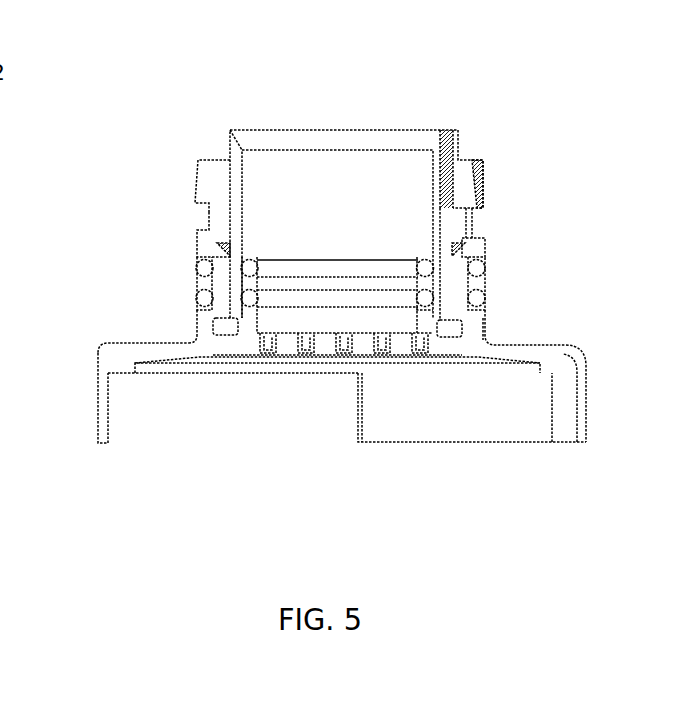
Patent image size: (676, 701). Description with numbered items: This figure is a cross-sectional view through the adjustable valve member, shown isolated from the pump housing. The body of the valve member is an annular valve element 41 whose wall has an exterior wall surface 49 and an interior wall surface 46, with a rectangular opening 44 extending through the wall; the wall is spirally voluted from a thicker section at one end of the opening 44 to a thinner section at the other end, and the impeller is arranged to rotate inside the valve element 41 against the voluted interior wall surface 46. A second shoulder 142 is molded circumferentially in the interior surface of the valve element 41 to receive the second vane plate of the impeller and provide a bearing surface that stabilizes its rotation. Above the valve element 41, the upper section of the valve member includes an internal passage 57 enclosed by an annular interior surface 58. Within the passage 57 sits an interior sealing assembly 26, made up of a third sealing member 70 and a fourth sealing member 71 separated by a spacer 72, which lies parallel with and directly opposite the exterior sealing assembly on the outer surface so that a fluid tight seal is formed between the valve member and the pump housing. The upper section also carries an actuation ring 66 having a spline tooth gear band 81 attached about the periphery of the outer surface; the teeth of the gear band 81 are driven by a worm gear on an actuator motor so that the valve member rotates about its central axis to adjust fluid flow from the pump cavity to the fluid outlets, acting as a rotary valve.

The interior sealing assembly 26 is at (277, 253).
The annular valve element 41 is at (560, 345).
The rectangular opening 44 is at (245, 411).
The interior wall surface 46 is at (422, 430).
The exterior wall surface 49 is at (98, 412).
The internal passage 57 is at (332, 166).
The annular interior surface 58 is at (425, 202).
The actuation ring 66 is at (207, 231).
The third sealing member 70 is at (268, 266).
The fourth sealing member 71 is at (397, 298).
The spacer 72 is at (348, 285).
The spline tooth gear band 81 is at (477, 186).
The second shoulder 142 is at (168, 370).